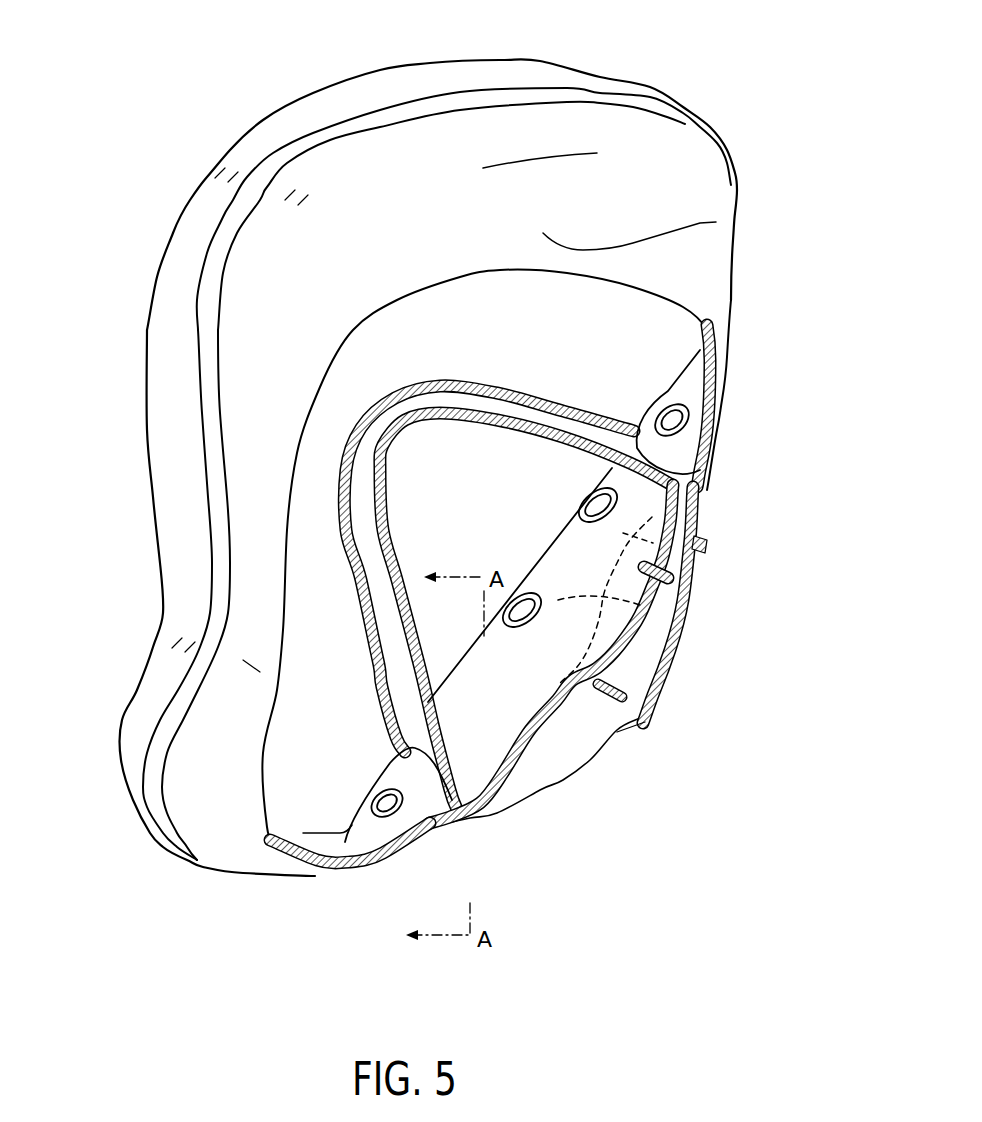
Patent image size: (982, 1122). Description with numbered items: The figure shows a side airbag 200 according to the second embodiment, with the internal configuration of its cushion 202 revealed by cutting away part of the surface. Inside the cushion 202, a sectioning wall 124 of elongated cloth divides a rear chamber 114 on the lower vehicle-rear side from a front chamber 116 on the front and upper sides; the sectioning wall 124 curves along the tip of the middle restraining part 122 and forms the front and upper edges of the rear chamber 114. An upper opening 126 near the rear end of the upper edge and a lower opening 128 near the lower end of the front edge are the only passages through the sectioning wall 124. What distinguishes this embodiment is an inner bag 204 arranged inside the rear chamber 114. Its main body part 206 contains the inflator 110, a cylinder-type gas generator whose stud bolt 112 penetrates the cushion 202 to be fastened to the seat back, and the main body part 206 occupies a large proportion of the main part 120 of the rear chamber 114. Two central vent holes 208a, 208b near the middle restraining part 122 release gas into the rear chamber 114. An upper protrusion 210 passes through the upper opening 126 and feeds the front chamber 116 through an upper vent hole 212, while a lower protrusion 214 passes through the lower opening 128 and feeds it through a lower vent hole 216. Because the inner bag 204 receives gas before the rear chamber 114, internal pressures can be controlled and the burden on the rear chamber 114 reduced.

The side airbag 200 is at (198, 27).
The cushion 202 is at (506, 60).
The front chamber 116 is at (736, 225).
The upper opening 126 is at (720, 437).
The rear chamber 114 is at (575, 780).
The upper protrusion 210 is at (700, 380).
The sectioning wall 124 is at (523, 391).
The middle restraining part 122 is at (437, 447).
The main part 120 is at (693, 507).
The lower protrusion 214 is at (395, 866).
The main body part 206 is at (675, 620).
The inflator 110 is at (708, 546).
The stud bolt 112 is at (680, 577).
The upper vent hole 212 is at (655, 400).
The central vent hole 208a is at (583, 497).
The central vent hole 208b is at (523, 627).
The inner bag 204 is at (543, 540).
The lower vent hole 216 is at (383, 787).
The lower opening 128 is at (437, 826).